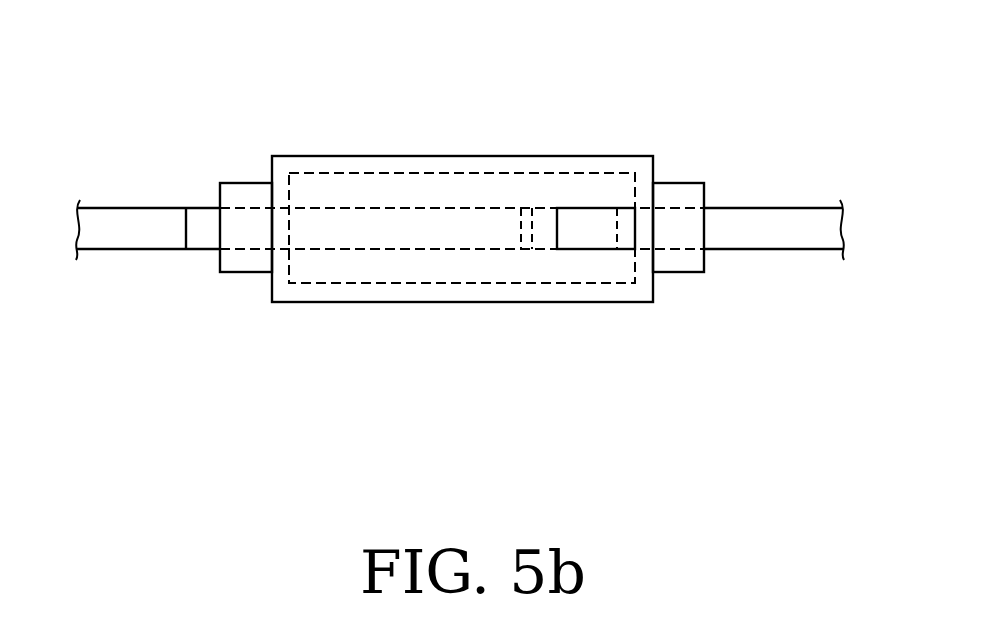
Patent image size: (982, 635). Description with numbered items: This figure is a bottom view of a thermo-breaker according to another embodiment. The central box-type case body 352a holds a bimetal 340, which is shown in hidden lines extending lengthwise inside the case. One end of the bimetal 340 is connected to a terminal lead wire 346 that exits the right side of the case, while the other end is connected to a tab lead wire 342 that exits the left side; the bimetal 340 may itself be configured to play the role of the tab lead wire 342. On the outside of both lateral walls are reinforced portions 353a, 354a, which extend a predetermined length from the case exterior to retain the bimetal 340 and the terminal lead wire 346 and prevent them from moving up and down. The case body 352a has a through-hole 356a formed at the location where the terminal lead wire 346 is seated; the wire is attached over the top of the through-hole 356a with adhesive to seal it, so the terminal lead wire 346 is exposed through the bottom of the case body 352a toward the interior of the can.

The bimetal 340 is at (367, 213).
The tab lead wire 342 is at (153, 218).
The terminal lead wire 346 is at (778, 217).
The case body 352a is at (618, 162).
The reinforced portion 353a is at (253, 257).
The reinforced portion 354a is at (692, 258).
The through-hole 356a is at (570, 215).